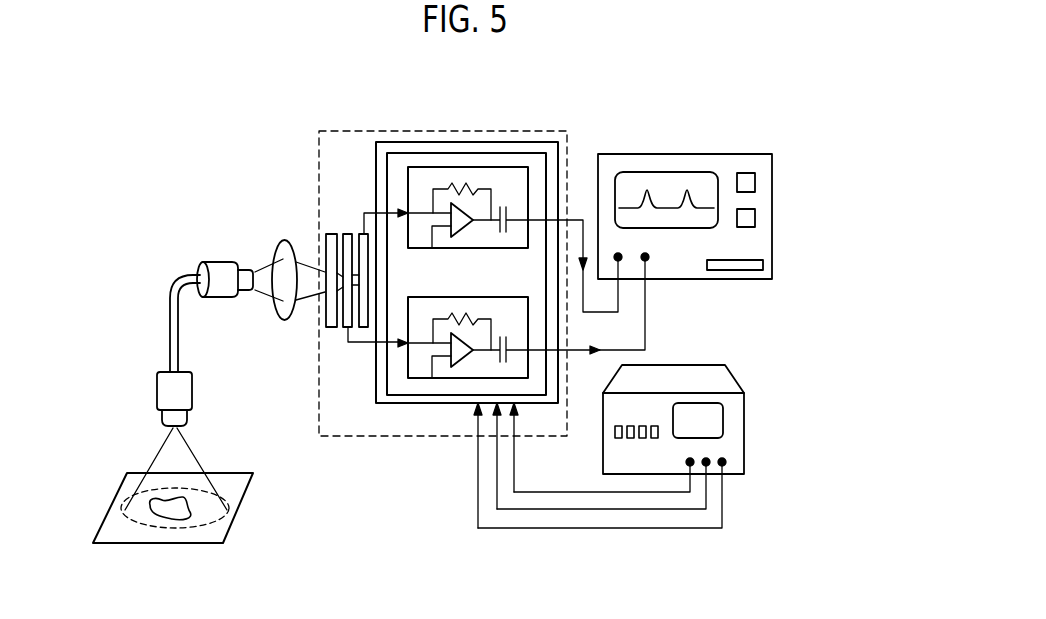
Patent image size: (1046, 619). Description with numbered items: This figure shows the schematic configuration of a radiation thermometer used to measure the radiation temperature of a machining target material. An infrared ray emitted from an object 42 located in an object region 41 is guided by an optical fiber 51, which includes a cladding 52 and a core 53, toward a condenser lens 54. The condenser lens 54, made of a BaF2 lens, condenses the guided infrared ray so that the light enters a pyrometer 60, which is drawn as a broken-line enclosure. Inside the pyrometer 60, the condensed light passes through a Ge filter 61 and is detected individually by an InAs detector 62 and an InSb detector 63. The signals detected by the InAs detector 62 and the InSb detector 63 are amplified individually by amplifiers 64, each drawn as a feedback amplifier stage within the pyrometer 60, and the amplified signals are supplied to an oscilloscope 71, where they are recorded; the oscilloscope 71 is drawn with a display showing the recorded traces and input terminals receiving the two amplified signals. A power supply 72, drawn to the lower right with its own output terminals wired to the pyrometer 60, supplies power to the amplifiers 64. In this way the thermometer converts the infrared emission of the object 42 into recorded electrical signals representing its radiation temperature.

The object region 41 is at (142, 522).
The object 42 is at (182, 515).
The optical fiber 51 is at (170, 322).
The cladding 52 is at (217, 297).
The core 53 is at (253, 268).
The condenser lens 54 is at (284, 320).
The pyrometer 60 is at (385, 436).
The Ge filter 61 is at (330, 234).
The InAs detector 62 is at (348, 234).
The InSb detector 63 is at (364, 234).
The amplifiers 64 is at (492, 167).
The oscilloscope 71 is at (685, 154).
The power supply 72 is at (678, 365).